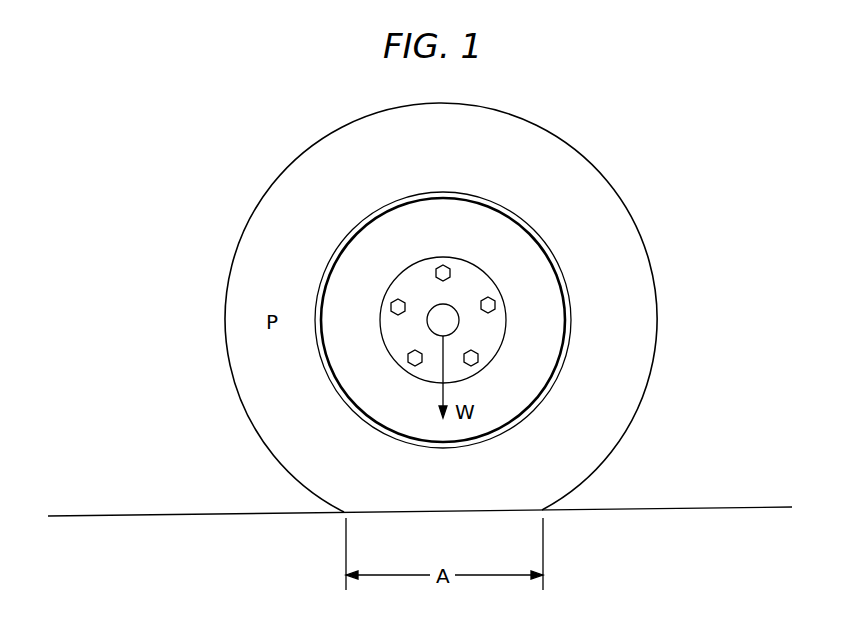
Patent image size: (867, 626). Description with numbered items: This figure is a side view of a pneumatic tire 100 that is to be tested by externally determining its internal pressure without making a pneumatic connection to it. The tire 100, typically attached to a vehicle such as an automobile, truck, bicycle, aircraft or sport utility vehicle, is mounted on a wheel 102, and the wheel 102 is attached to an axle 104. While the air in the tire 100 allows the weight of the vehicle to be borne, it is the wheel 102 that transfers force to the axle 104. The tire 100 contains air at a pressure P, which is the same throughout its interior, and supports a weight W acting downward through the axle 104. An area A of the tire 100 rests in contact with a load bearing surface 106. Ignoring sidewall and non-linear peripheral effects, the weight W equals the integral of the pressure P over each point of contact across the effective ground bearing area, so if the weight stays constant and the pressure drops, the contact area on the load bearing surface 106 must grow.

The pneumatic tire 100 is at (585, 158).
The wheel 102 is at (458, 235).
The axle 104 is at (447, 317).
The load bearing surface 106 is at (690, 506).